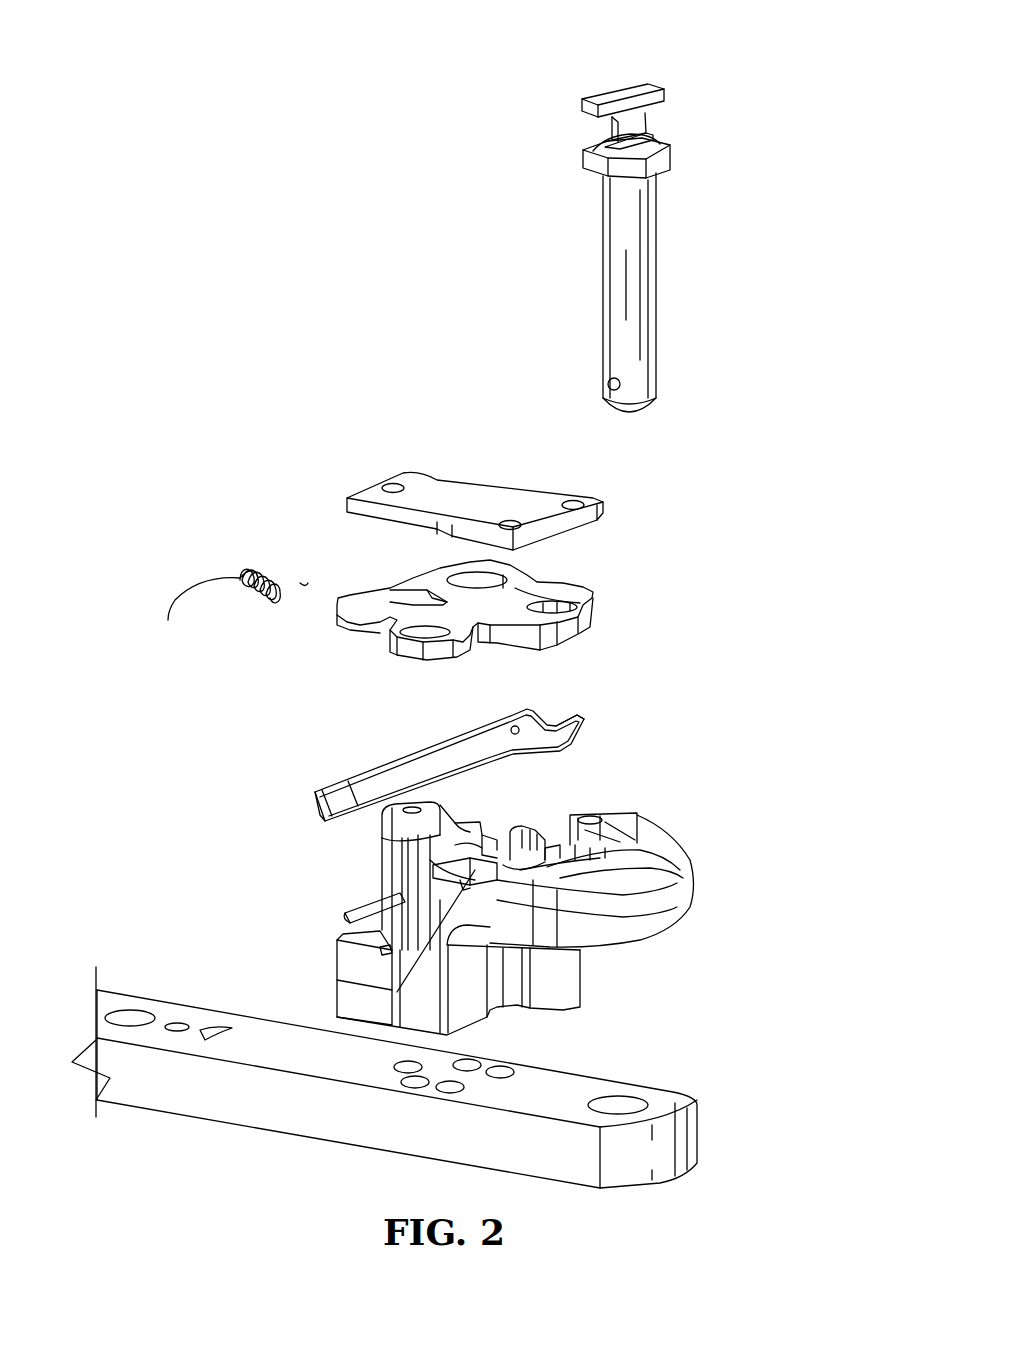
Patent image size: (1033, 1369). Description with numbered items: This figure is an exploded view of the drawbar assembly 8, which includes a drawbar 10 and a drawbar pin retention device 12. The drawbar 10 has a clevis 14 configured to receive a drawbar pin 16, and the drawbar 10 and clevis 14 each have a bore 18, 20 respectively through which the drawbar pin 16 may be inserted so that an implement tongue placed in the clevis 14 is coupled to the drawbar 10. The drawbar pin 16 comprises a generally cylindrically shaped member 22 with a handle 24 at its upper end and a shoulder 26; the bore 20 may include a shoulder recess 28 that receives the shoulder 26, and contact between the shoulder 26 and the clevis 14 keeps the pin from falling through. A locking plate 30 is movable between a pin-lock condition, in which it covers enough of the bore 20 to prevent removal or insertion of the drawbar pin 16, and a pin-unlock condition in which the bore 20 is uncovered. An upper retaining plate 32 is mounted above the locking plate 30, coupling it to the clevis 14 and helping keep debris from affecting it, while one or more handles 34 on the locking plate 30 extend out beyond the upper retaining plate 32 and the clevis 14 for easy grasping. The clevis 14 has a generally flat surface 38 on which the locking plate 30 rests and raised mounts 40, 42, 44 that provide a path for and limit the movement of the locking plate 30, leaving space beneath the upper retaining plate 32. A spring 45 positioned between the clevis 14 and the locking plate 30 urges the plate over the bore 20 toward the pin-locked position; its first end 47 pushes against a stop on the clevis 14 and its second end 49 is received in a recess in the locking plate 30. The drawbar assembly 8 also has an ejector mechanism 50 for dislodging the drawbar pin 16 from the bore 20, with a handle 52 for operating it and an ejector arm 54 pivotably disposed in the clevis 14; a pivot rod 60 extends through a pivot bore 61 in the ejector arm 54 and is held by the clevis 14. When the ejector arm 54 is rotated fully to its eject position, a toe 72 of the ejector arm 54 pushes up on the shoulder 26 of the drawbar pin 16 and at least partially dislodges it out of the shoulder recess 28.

The drawbar assembly 8 is at (402, 240).
The drawbar 10 is at (407, 1090).
The drawbar pin retention device 12 is at (348, 408).
The clevis 14 is at (517, 894).
The drawbar pin 16 is at (685, 221).
The bore 18 is at (625, 1098).
The bore 20 is at (630, 845).
The cylindrically shaped member 22 is at (642, 235).
The handle 24 is at (618, 90).
The shoulder 26 is at (672, 155).
The shoulder recess 28 is at (662, 855).
The locking plate 30 is at (485, 612).
The upper retaining plate 32 is at (510, 512).
The handles 34 is at (535, 582).
The flat surface 38 is at (485, 835).
The raised mount 40 is at (612, 820).
The raised mount 42 is at (525, 830).
The raised mount 44 is at (392, 823).
The spring 45 is at (237, 566).
The first end 47 is at (203, 611).
The second end 49 is at (308, 580).
The ejector mechanism 50 is at (443, 769).
The handle 52 is at (316, 800).
The ejector arm 54 is at (470, 755).
The pivot rod 60 is at (355, 905).
The pivot bore 61 is at (522, 724).
The toe 72 is at (580, 720).